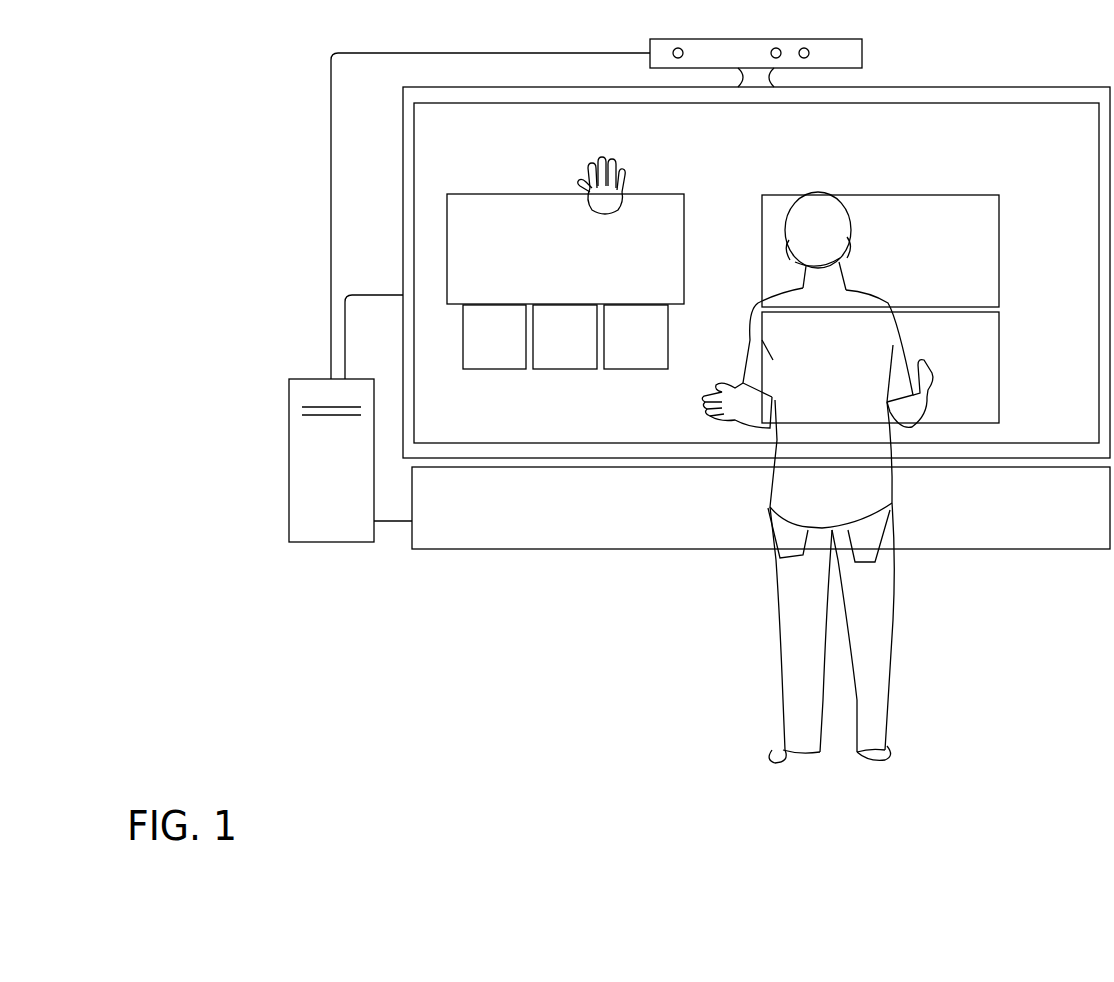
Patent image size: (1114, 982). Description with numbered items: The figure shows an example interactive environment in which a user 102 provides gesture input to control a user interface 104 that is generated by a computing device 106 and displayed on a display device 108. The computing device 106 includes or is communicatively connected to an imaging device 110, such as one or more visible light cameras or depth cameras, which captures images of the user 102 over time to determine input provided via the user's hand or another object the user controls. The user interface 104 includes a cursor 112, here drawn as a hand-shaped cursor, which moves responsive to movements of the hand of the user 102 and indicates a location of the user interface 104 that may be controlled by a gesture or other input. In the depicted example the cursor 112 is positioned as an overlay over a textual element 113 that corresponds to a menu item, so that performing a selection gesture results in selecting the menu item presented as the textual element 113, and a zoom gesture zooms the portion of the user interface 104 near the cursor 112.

The user 102 is at (875, 336).
The user interface 104 is at (967, 135).
The computing device 106 is at (350, 534).
The display device 108 is at (462, 128).
The imaging device 110 is at (862, 48).
The cursor 112 is at (622, 200).
The textual element 113 is at (629, 157).